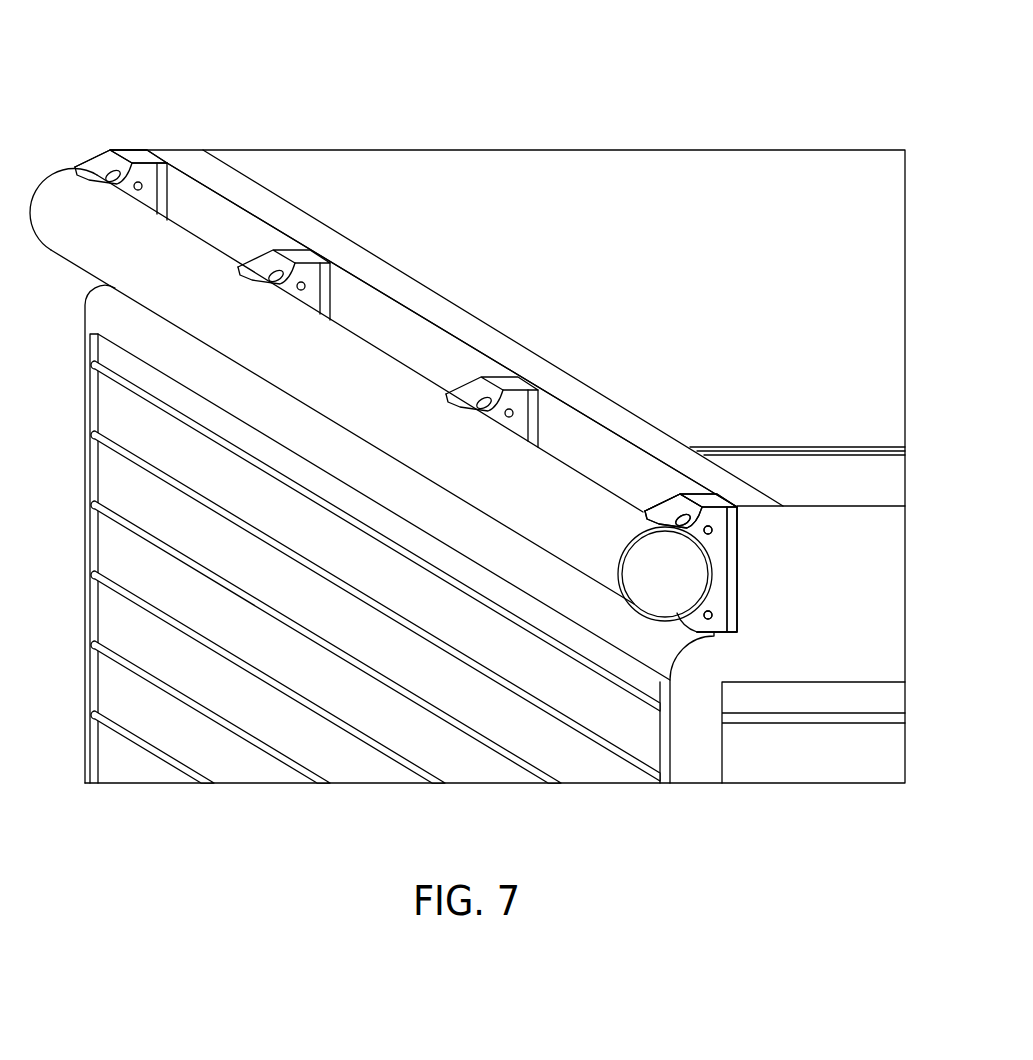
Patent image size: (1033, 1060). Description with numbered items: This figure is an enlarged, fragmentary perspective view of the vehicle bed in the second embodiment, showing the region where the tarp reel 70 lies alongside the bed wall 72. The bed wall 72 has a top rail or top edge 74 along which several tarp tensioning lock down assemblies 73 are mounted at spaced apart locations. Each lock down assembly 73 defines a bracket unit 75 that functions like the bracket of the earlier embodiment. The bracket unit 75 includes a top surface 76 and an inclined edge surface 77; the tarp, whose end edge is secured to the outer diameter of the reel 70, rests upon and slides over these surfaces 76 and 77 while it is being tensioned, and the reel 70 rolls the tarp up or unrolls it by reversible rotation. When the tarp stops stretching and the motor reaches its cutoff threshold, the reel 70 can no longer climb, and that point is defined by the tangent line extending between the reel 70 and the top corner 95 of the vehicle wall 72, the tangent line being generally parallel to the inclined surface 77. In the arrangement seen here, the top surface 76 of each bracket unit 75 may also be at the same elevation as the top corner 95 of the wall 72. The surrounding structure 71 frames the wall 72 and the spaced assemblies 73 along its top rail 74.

The reel 70 is at (60, 188).
The frame 71 is at (428, 144).
The bed wall 72 is at (303, 772).
The tarp tensioning lock down assembly 73 is at (136, 143).
The top rail 74 is at (203, 160).
The bracket unit 75 is at (107, 143).
The top surface 76 is at (710, 503).
The inclined edge surface 77 is at (673, 504).
The top corner 95 is at (240, 203).